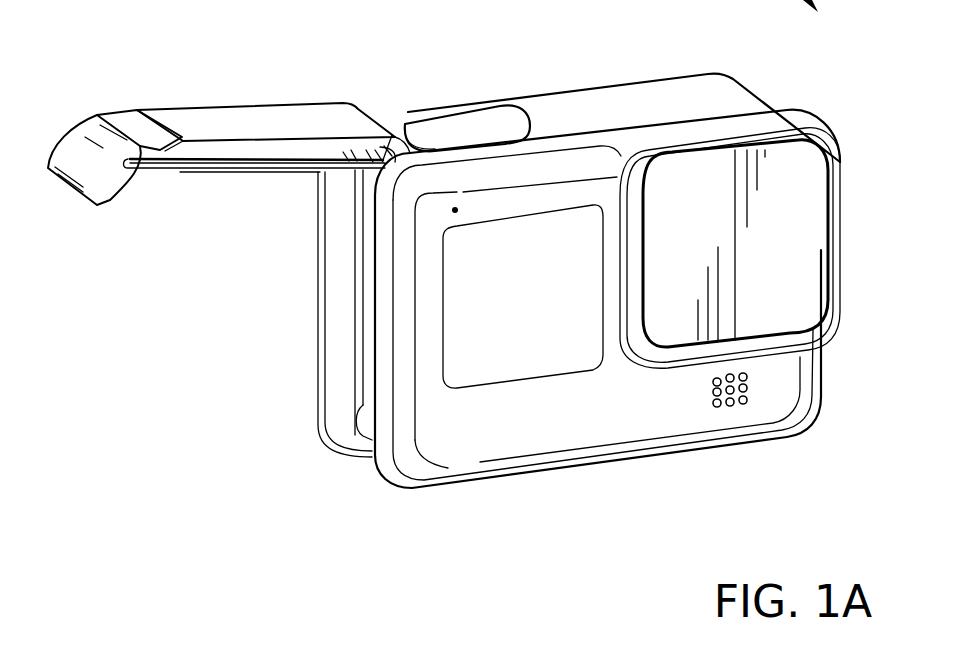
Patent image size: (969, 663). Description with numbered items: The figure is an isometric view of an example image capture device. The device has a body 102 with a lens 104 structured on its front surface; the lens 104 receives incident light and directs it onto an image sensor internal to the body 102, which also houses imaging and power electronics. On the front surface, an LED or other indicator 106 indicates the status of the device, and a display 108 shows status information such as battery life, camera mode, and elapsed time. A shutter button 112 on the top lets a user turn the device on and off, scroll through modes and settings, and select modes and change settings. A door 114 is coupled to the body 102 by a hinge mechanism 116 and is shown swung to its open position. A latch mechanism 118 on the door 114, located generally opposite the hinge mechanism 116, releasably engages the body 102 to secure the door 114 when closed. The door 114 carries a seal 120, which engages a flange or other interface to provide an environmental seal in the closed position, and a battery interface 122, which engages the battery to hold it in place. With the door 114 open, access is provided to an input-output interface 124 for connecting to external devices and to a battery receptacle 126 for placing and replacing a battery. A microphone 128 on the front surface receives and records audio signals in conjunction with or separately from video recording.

The body 102 is at (637, 90).
The lens 104 is at (800, 243).
The indicator 106 is at (455, 210).
The display 108 is at (525, 357).
The shutter button 112 is at (422, 122).
The door 114 is at (273, 113).
The hinge mechanism 116 is at (397, 148).
The latch mechanism 118 is at (73, 148).
The seal 120 is at (163, 172).
The battery interface 122 is at (217, 173).
The input-output (I/O) interface 124 is at (365, 418).
The battery receptacle 126 is at (362, 197).
The microphone 128 is at (732, 405).